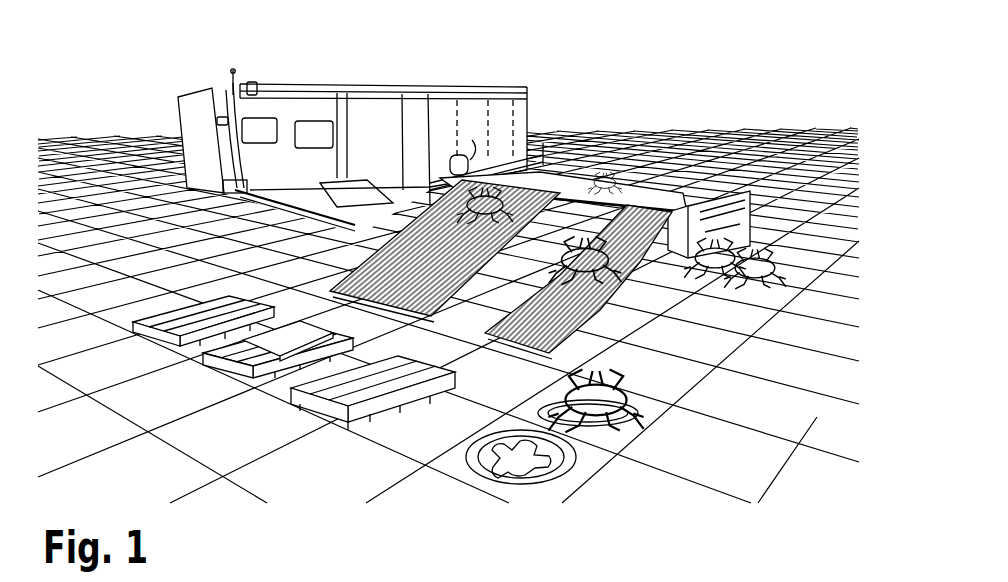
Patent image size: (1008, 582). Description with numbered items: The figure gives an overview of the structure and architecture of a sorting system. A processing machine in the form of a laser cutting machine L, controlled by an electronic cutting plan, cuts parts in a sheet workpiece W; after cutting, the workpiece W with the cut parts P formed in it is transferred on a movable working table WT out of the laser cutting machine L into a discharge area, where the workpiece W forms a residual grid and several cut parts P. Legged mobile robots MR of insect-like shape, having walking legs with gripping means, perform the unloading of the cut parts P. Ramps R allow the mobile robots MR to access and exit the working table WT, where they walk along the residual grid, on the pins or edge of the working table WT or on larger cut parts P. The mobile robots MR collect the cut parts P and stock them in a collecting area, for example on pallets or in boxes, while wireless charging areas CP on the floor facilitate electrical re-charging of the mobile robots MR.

The laser cutting machine L is at (430, 82).
The workpiece W is at (549, 173).
The legged mobile robots MR is at (697, 250).
The working table WT is at (782, 240).
The ramps R is at (605, 318).
The cut parts P is at (131, 329).
The wireless charging areas CP is at (577, 437).